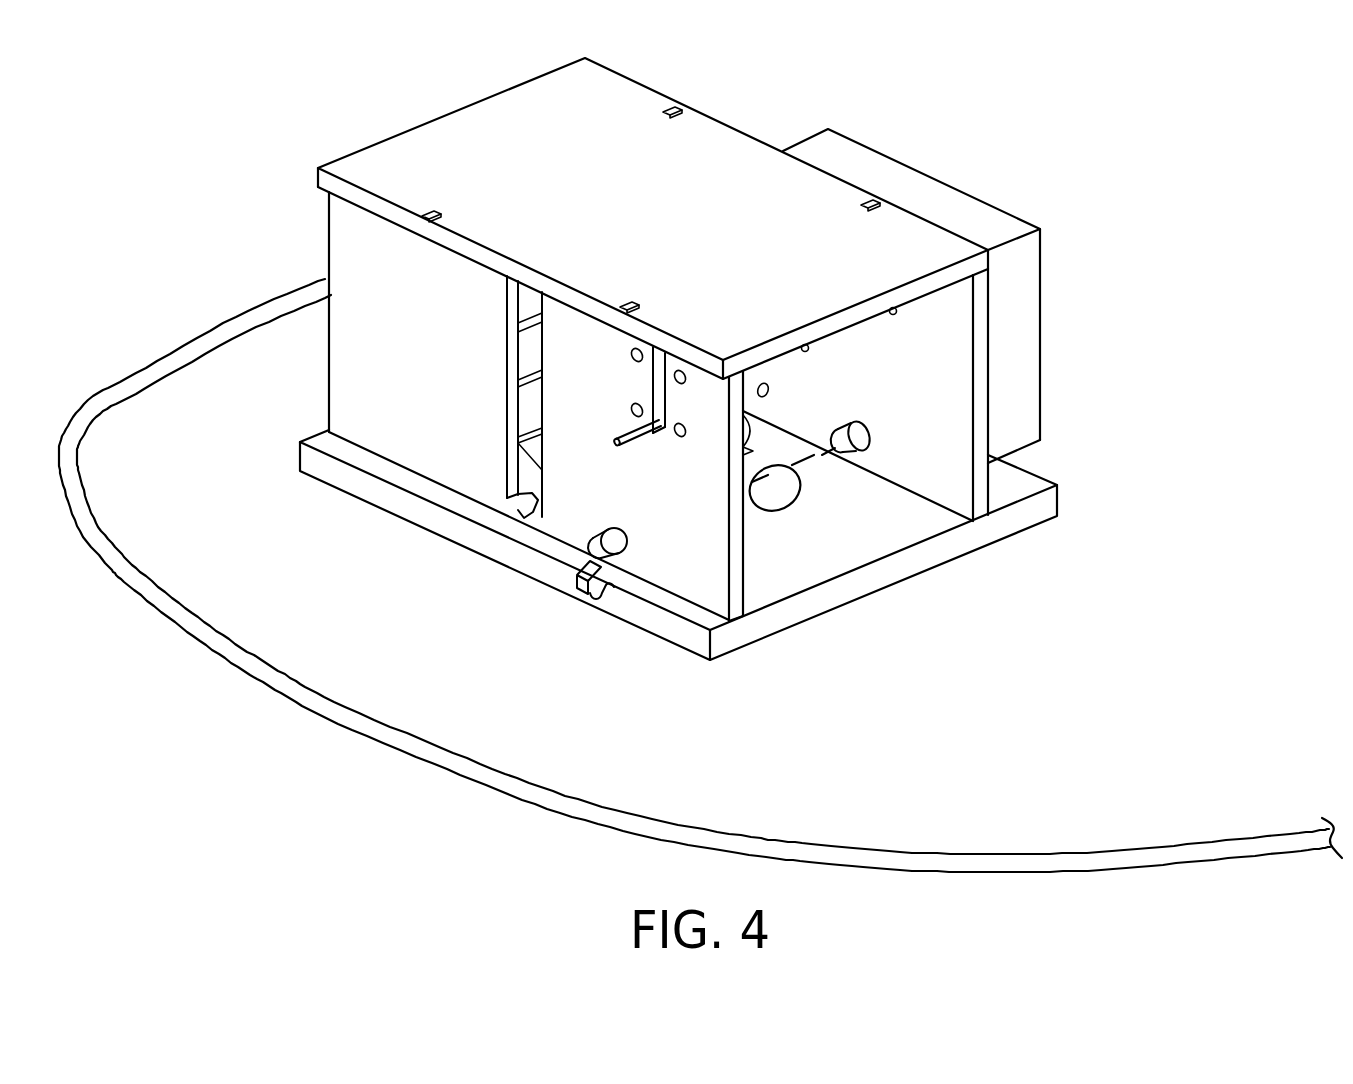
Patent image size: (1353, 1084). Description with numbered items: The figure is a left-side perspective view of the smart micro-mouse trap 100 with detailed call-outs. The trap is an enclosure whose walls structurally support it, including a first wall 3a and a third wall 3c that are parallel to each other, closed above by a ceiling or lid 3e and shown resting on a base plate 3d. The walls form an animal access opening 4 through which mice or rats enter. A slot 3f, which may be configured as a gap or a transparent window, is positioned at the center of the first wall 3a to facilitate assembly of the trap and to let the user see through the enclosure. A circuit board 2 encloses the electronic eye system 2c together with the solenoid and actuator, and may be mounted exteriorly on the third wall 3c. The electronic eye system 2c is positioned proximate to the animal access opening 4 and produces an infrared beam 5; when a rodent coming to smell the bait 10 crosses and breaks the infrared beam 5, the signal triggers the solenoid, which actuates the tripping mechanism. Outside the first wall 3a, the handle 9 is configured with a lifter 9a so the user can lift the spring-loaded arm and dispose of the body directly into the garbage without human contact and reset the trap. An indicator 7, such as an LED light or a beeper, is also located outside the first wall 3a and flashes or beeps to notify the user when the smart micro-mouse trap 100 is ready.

The smart micro-mouse trap 100 is at (1085, 88).
The circuit board 2 is at (1020, 308).
The electronic eye system 2c is at (842, 440).
The first wall 3a is at (362, 348).
The third wall 3c is at (980, 387).
The base plate of housing 3d is at (873, 578).
The lid 3e is at (678, 216).
The slot 3f is at (513, 403).
The animal access opening 4 is at (995, 607).
The infrared beam 5 is at (807, 460).
The indicator 7 is at (600, 543).
The handle 9 is at (633, 437).
The lifter 9a is at (655, 388).
The bait 10 is at (778, 495).